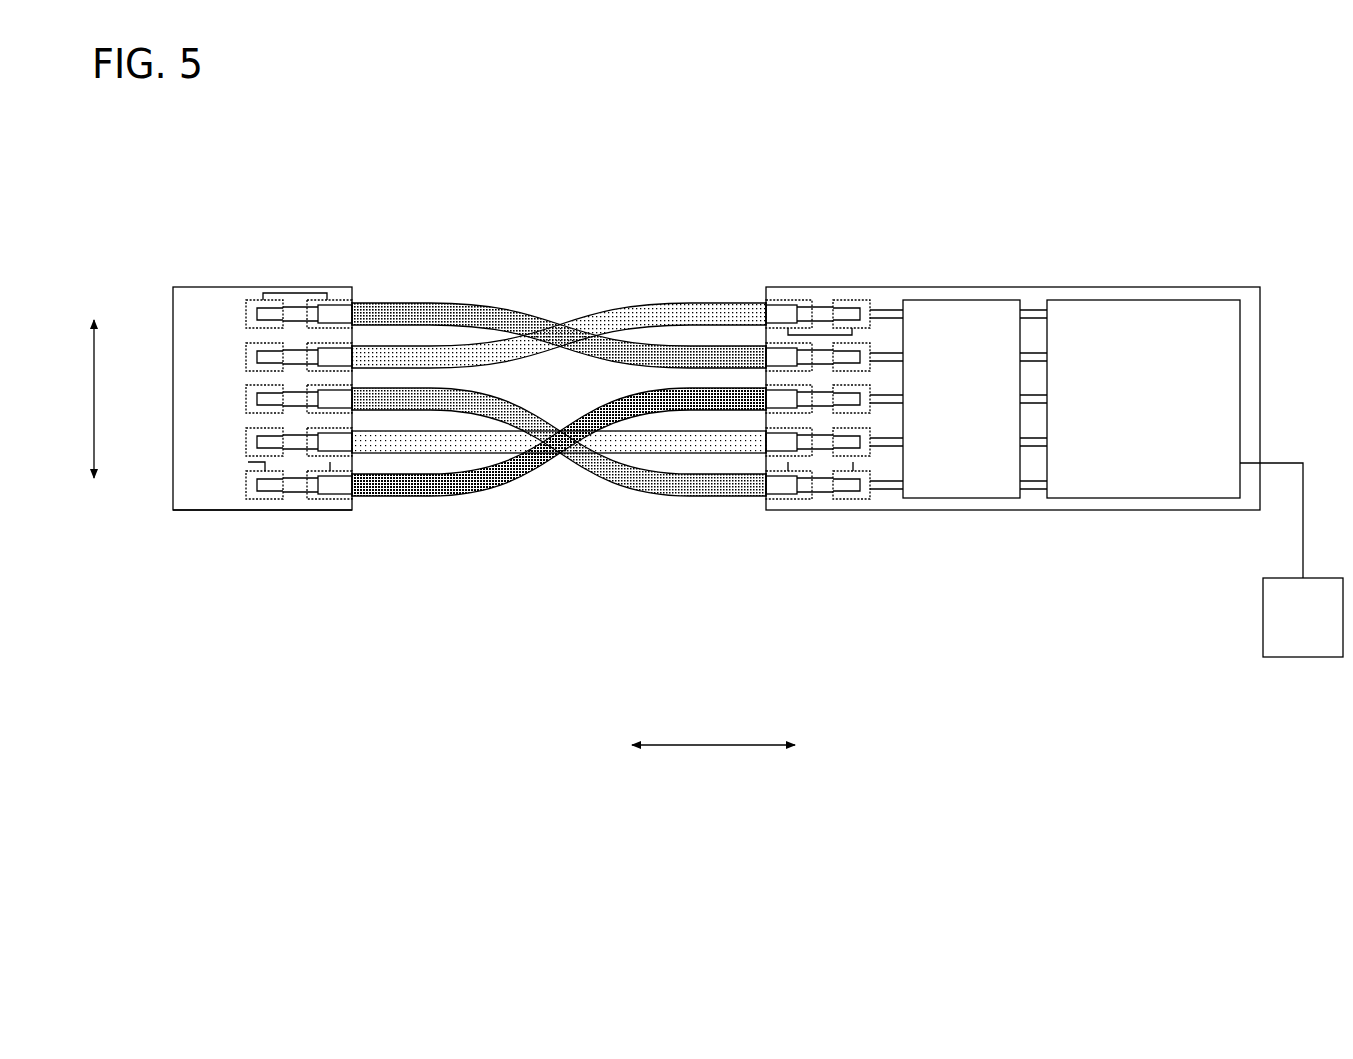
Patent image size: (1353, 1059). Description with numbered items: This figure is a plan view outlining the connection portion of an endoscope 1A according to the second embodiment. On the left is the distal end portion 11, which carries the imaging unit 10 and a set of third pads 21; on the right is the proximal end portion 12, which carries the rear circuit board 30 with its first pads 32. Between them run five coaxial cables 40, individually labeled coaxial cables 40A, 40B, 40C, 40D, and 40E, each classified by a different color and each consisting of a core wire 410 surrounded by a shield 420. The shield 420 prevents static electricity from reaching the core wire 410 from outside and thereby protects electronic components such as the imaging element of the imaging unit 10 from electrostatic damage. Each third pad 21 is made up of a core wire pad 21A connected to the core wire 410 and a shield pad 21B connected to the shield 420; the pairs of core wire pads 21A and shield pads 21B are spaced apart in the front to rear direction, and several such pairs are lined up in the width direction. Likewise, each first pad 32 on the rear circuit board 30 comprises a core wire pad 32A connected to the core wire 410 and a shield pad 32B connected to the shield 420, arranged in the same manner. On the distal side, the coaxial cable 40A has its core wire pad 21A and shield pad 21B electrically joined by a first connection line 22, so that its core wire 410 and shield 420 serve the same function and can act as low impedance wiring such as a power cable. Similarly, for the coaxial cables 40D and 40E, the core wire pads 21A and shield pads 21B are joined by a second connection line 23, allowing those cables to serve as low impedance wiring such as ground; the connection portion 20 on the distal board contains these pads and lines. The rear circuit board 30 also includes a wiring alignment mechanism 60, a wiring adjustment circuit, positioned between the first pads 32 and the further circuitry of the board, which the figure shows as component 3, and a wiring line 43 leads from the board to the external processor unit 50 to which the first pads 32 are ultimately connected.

The endoscope 1A is at (1080, 178).
The electronic component 3 is at (1135, 300).
The imaging unit 10 is at (172, 470).
The distal end portion 11 is at (180, 285).
The proximal end portion 12 is at (1200, 286).
The first connector portion 20 is at (202, 512).
The third pad 21 is at (358, 630).
The core wire pad 21A is at (246, 354).
The shield pad 21B is at (345, 300).
The first connection line 22 is at (293, 293).
The second connection line 23 is at (248, 462).
The rear circuit board 30 is at (1062, 512).
The first pad 32 is at (882, 170).
The core wire pad 32A is at (847, 300).
The shield pad 32B is at (800, 300).
The coaxial cable 40 is at (559, 393).
The coaxial cable 40A is at (455, 303).
The coaxial cable 40B is at (385, 345).
The coaxial cable 40C is at (380, 410).
The coaxial cable 40D is at (455, 455).
The coaxial cable 40E is at (510, 478).
The wiring line 43 is at (1285, 463).
The external processor unit 50 is at (1295, 660).
The wiring alignment mechanism 60 is at (962, 498).
The core wire 410 is at (262, 300).
The shield 420 is at (340, 300).